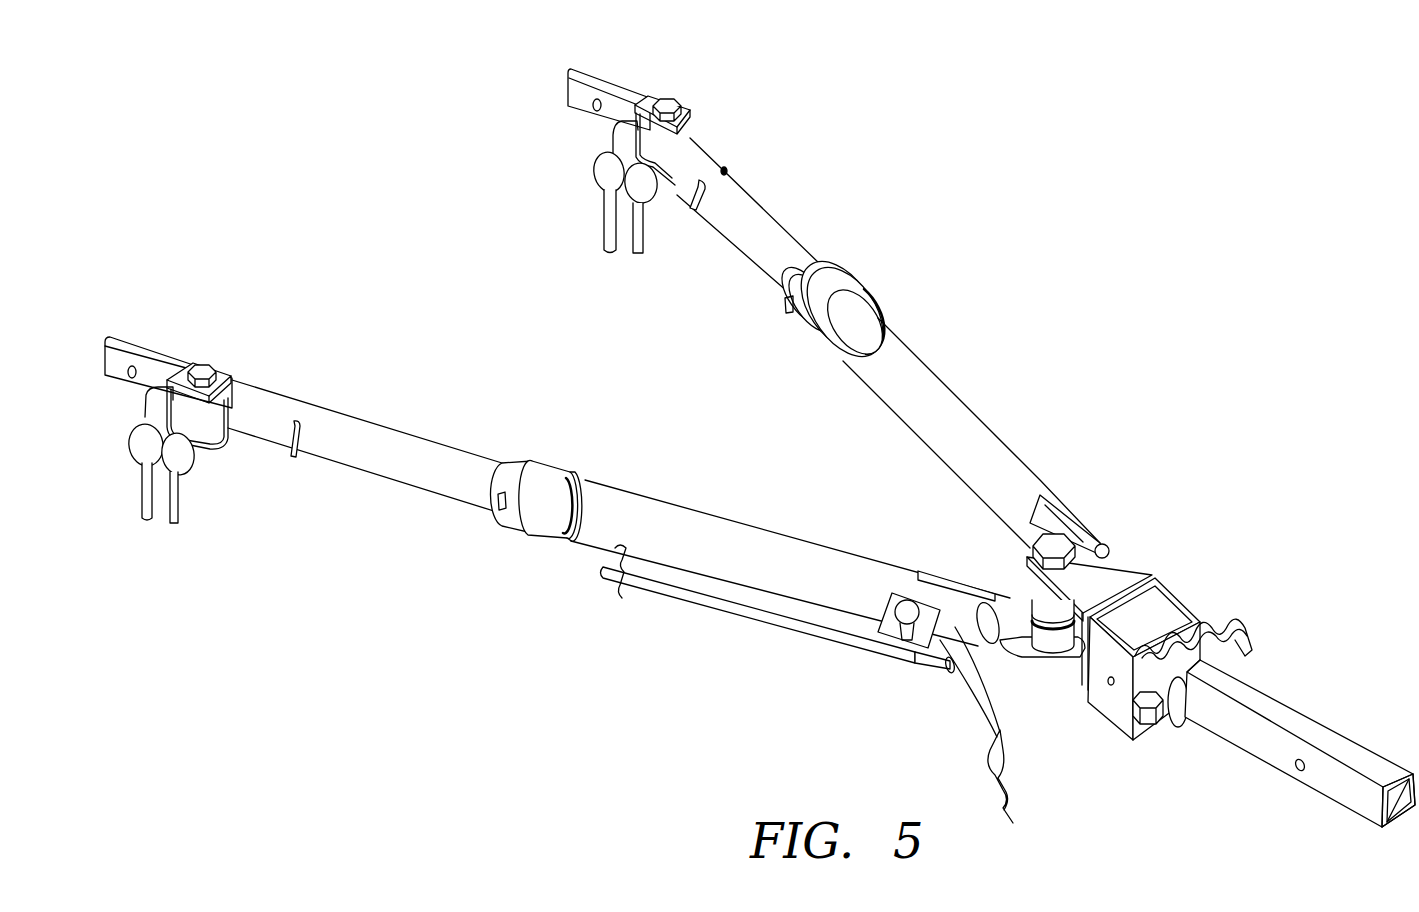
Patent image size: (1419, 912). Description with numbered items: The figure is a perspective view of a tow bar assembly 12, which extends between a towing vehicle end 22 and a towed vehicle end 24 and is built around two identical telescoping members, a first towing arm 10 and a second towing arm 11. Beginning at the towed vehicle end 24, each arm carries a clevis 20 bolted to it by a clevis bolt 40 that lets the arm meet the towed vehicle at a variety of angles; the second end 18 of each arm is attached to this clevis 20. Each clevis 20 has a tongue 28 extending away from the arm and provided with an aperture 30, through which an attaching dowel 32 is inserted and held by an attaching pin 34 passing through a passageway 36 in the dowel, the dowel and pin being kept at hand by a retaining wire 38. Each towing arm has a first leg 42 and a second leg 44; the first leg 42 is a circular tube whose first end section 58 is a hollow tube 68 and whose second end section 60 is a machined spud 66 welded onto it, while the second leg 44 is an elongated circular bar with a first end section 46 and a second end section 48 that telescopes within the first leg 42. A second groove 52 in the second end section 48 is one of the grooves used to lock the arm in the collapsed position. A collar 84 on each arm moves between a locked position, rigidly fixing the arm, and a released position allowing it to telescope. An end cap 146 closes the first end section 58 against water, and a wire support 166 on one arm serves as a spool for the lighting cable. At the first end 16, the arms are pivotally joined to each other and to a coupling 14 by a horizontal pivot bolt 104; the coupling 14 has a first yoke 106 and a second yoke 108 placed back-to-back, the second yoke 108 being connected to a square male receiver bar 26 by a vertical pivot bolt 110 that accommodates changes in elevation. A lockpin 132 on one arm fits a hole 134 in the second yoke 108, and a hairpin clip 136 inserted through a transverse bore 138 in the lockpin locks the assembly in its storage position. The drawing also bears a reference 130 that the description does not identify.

The first towing arm 10 is at (362, 572).
The second towing arm 11 is at (967, 246).
The tow bar assembly 12 is at (1245, 480).
The coupling 14 is at (1193, 596).
The first end 16 is at (1108, 552).
The second end 18 is at (688, 135).
The clevis 20 is at (155, 362).
The towing vehicle end 22 is at (1330, 842).
The towed vehicle end 24 is at (148, 607).
The male receiver bar 26 is at (1327, 738).
The tongue 28 is at (127, 342).
The aperture 30 is at (132, 376).
The attaching dowel 32 is at (142, 505).
The attaching pin 34 is at (175, 517).
The passageway 36 is at (152, 515).
The retaining wire 38 is at (152, 393).
The clevis bolt 40 is at (203, 363).
The first leg 42 is at (780, 540).
The second leg 44 is at (771, 224).
The first end section 46 is at (452, 455).
The second end section 48 is at (235, 400).
The second groove 52 is at (292, 457).
The first end section 58 is at (1095, 547).
The second end section 60 is at (585, 480).
The machined spud 66 is at (568, 530).
The hollow tube 68 is at (655, 490).
The collar 84 is at (543, 460).
The horizontal pivot bolt 104 is at (1052, 546).
The first yoke 106 is at (1152, 568).
The second yoke 108 is at (1113, 707).
The vertical pivot bolt 110 is at (1143, 713).
The release pin 130 is at (500, 512).
The lockpin 132 is at (925, 670).
The hole 134 is at (1110, 685).
The hairpin clip 136 is at (1011, 806).
The transverse bore 138 is at (933, 660).
The end cap 146 is at (993, 627).
The wire support 166 is at (733, 605).